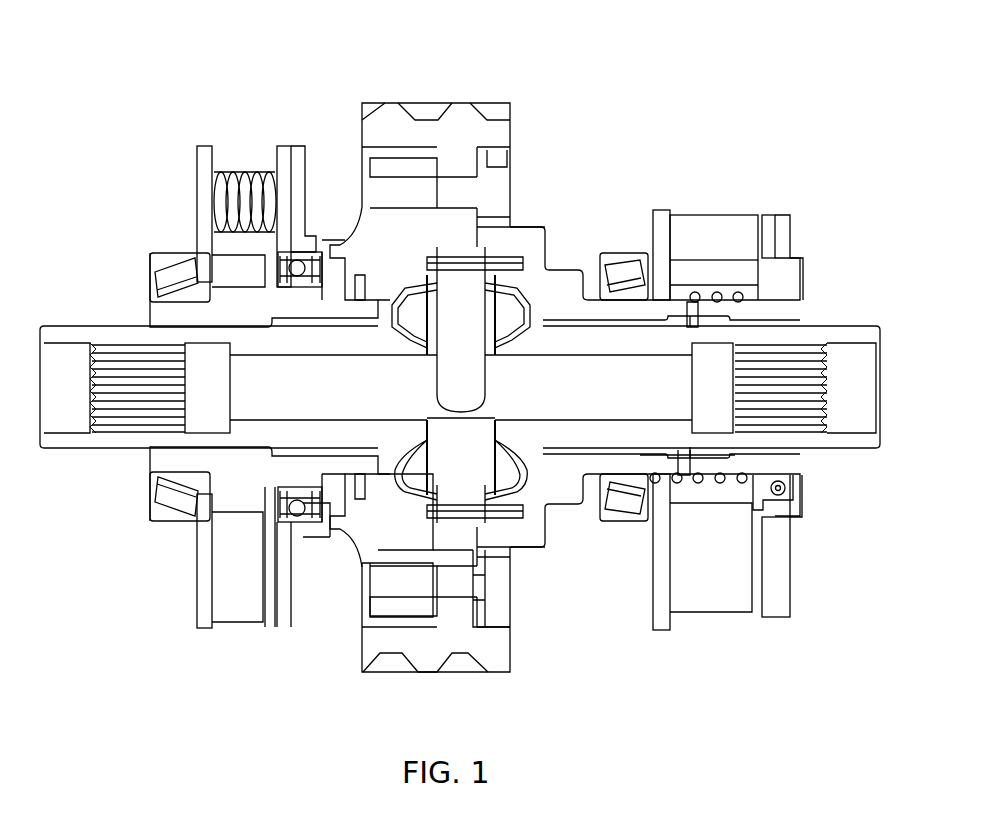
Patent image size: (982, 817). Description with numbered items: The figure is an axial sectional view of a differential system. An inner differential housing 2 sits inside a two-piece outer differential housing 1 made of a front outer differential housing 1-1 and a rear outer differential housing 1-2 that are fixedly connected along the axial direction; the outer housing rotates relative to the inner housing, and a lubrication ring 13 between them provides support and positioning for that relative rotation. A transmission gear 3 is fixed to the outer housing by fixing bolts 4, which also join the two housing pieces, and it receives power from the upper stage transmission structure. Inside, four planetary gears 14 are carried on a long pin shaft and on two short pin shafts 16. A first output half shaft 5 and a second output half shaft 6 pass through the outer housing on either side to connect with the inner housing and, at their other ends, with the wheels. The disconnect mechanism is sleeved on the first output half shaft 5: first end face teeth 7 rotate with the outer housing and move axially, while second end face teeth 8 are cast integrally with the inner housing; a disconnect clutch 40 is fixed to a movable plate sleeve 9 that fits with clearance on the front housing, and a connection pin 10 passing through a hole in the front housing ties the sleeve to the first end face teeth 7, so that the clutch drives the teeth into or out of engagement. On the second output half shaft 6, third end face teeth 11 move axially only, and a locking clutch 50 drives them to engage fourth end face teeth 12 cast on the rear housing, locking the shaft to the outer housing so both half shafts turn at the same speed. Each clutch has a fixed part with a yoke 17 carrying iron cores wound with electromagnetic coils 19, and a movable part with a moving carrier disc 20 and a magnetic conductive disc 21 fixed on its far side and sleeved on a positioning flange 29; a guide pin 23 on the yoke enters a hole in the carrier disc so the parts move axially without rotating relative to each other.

The outer differential housing 1 is at (440, 264).
The front outer differential housing 1-1 is at (350, 240).
The rear outer differential housing 1-2 is at (490, 237).
The inner differential housing 2 is at (425, 553).
The transmission gear 3 is at (487, 130).
The fixing bolt 4 is at (497, 195).
The first output half shaft 5 is at (127, 337).
The second output half shaft 6 is at (800, 437).
The first end face teeth 7 is at (370, 502).
The second end face teeth 8 is at (410, 503).
The movable plate sleeve 9 is at (329, 515).
The connection pin 10 is at (340, 267).
The third end face teeth 11 is at (772, 523).
The fourth end face teeth 12 is at (683, 480).
The lubrication ring 13 is at (462, 482).
The planetary gear 14 is at (503, 482).
The short pin shaft 16 is at (510, 623).
The yoke 17 is at (208, 232).
The electromagnetic coil 19 is at (238, 572).
The moving carrier disc 20 is at (285, 157).
The magnetic conductive disc 21 is at (298, 152).
The guide pin 23 is at (700, 242).
The positioning flange 29 is at (305, 527).
The disconnect clutch 40 is at (225, 147).
The locking clutch 50 is at (780, 625).